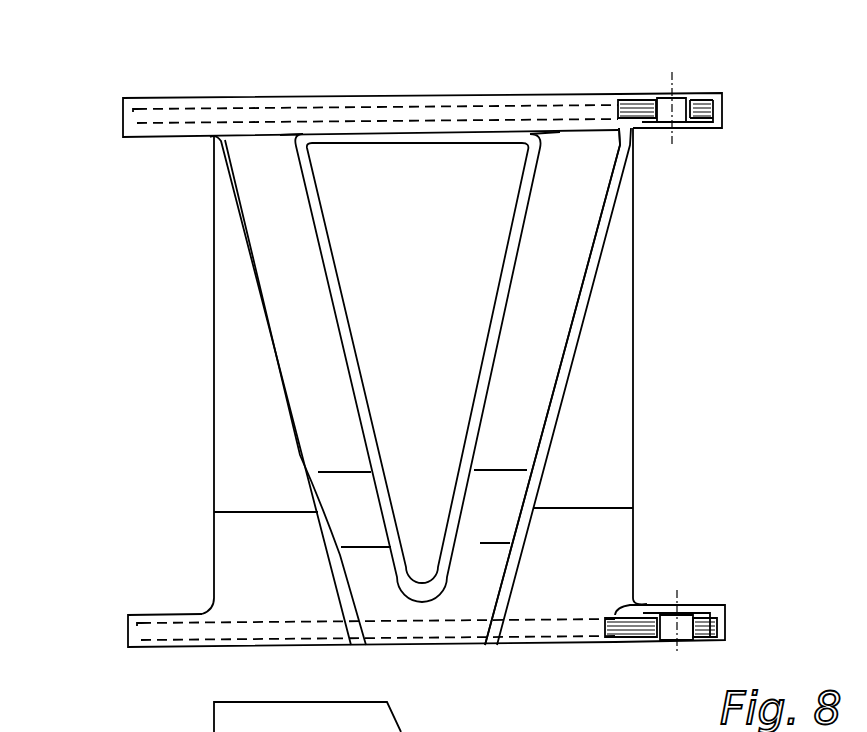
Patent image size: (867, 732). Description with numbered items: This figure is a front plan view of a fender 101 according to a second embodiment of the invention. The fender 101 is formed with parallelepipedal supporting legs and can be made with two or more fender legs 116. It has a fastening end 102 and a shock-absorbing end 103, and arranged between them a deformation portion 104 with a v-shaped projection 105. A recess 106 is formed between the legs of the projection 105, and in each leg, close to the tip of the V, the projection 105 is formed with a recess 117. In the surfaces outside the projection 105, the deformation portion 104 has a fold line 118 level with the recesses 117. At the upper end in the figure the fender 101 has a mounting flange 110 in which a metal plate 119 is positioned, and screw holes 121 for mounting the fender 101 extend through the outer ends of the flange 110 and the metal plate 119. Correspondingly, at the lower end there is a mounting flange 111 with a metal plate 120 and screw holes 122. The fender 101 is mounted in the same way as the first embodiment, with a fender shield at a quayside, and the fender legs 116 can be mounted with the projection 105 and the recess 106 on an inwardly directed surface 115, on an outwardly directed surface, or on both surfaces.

The fender 101 is at (748, 174).
The fastening end 102 is at (695, 94).
The shock-absorbing end 103 is at (713, 643).
The deformation portion 104 is at (652, 260).
The v-shaped projection 105 is at (292, 328).
The recess 106 is at (380, 250).
The mounting flange 110 is at (123, 108).
The mounting flange 111 is at (128, 625).
The inwardly directed surface 115 is at (610, 398).
The fender legs 116 is at (670, 293).
The recess 117 is at (350, 492).
The fold line 118 is at (225, 513).
The metal plate 119 is at (634, 96).
The metal plate 120 is at (637, 657).
The screw holes 121 is at (678, 98).
The screw holes 122 is at (683, 640).